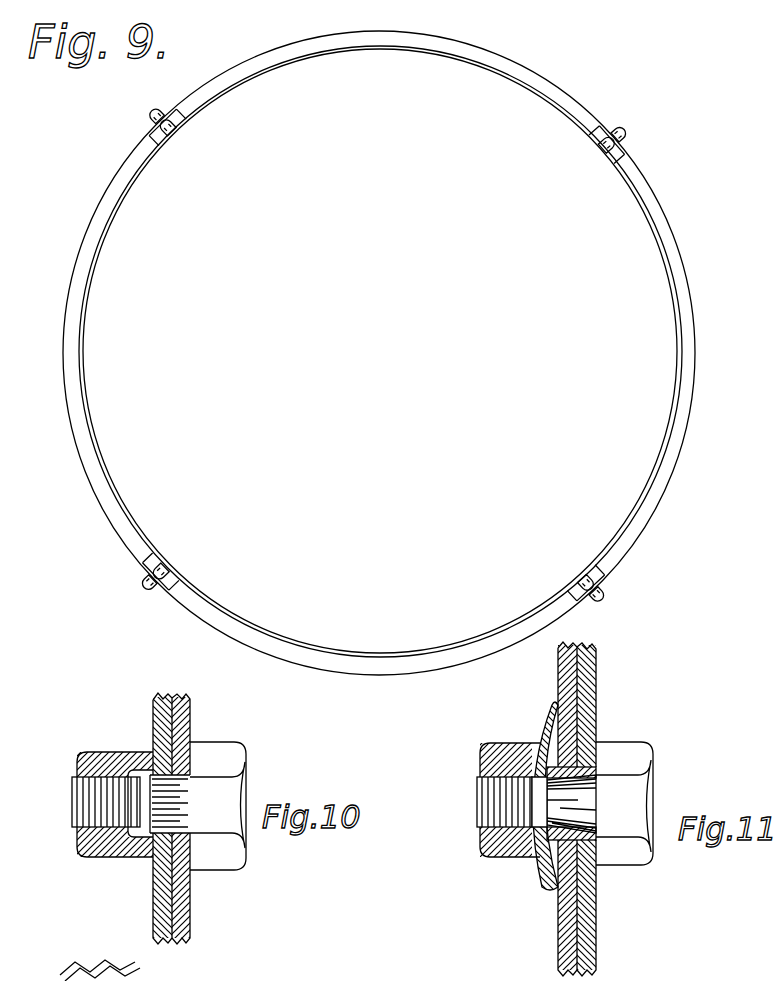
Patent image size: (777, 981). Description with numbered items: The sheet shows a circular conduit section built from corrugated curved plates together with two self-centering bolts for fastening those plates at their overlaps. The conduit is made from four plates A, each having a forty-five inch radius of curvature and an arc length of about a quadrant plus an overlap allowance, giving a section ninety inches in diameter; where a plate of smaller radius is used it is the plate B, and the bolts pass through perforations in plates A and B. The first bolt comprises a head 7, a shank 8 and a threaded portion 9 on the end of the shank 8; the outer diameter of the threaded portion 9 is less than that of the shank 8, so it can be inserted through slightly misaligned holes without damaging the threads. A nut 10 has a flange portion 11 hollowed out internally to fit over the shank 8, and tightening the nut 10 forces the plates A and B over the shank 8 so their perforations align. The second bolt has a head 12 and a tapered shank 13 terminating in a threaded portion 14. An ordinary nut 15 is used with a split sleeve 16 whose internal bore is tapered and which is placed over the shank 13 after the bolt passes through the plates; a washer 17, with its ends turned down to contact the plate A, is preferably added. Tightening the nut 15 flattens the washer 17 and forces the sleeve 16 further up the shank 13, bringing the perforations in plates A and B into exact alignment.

In FIG. 9, the plate A is at (310, 60).
In FIG. 10, the plate A is at (160, 712).
In FIG. 11, the plate A is at (562, 685).
In FIG. 10, the plate B is at (192, 707).
In FIG. 11, the plate B is at (593, 702).
In FIG. 10, the head 7 is at (217, 807).
In FIG. 10, the shank 8 is at (170, 797).
In FIG. 10, the threaded portion 9 is at (95, 783).
In FIG. 10, the nut 10 is at (95, 843).
In FIG. 10, the flange portion 11 is at (147, 858).
In FIG. 11, the head 12 is at (622, 808).
In FIG. 11, the shank 13 is at (570, 802).
In FIG. 11, the threaded portion 14 is at (498, 807).
In FIG. 11, the nut 15 is at (522, 835).
In FIG. 11, the split sleeve 16 is at (593, 870).
In FIG. 11, the washer 17 is at (548, 885).